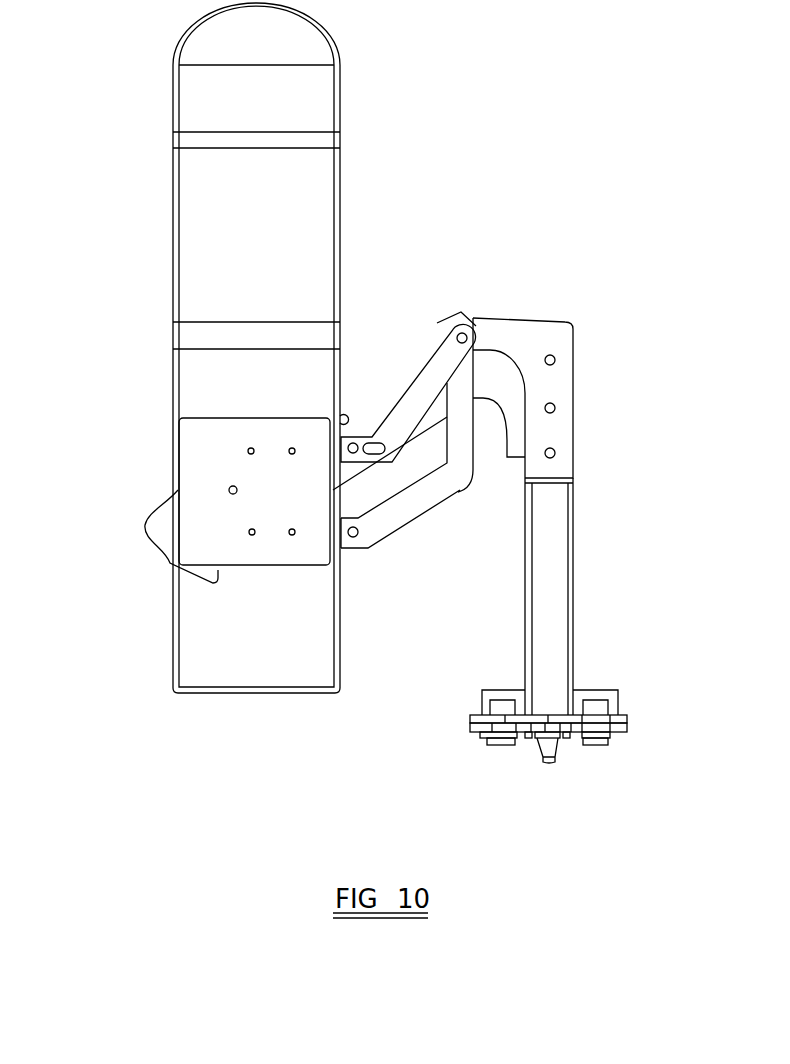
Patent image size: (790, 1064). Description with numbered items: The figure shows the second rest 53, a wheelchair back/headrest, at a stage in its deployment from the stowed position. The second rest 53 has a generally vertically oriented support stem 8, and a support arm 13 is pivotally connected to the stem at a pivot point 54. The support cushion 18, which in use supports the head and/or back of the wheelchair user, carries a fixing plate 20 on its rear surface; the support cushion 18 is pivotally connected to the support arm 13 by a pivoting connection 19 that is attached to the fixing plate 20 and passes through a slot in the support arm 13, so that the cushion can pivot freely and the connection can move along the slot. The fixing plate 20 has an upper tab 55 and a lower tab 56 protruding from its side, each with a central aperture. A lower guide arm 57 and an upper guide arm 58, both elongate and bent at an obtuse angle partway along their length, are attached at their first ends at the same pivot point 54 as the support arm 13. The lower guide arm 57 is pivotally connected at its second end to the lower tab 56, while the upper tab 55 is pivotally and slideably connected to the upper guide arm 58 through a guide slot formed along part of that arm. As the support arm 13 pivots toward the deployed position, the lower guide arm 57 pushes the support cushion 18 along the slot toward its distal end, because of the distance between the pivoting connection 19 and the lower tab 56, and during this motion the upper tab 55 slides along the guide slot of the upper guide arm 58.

The support stem 8 is at (552, 607).
The support arm 13 is at (152, 537).
The support cushion 18 is at (302, 195).
The pivoting connection 19 is at (229, 489).
The fixing plate 20 is at (247, 550).
The second rest 53 is at (488, 230).
The pivot point 54 is at (477, 320).
The upper tab 55 is at (349, 437).
The lower tab 56 is at (353, 537).
The lower guide arm 57 is at (427, 510).
The upper guide arm 58 is at (424, 367).